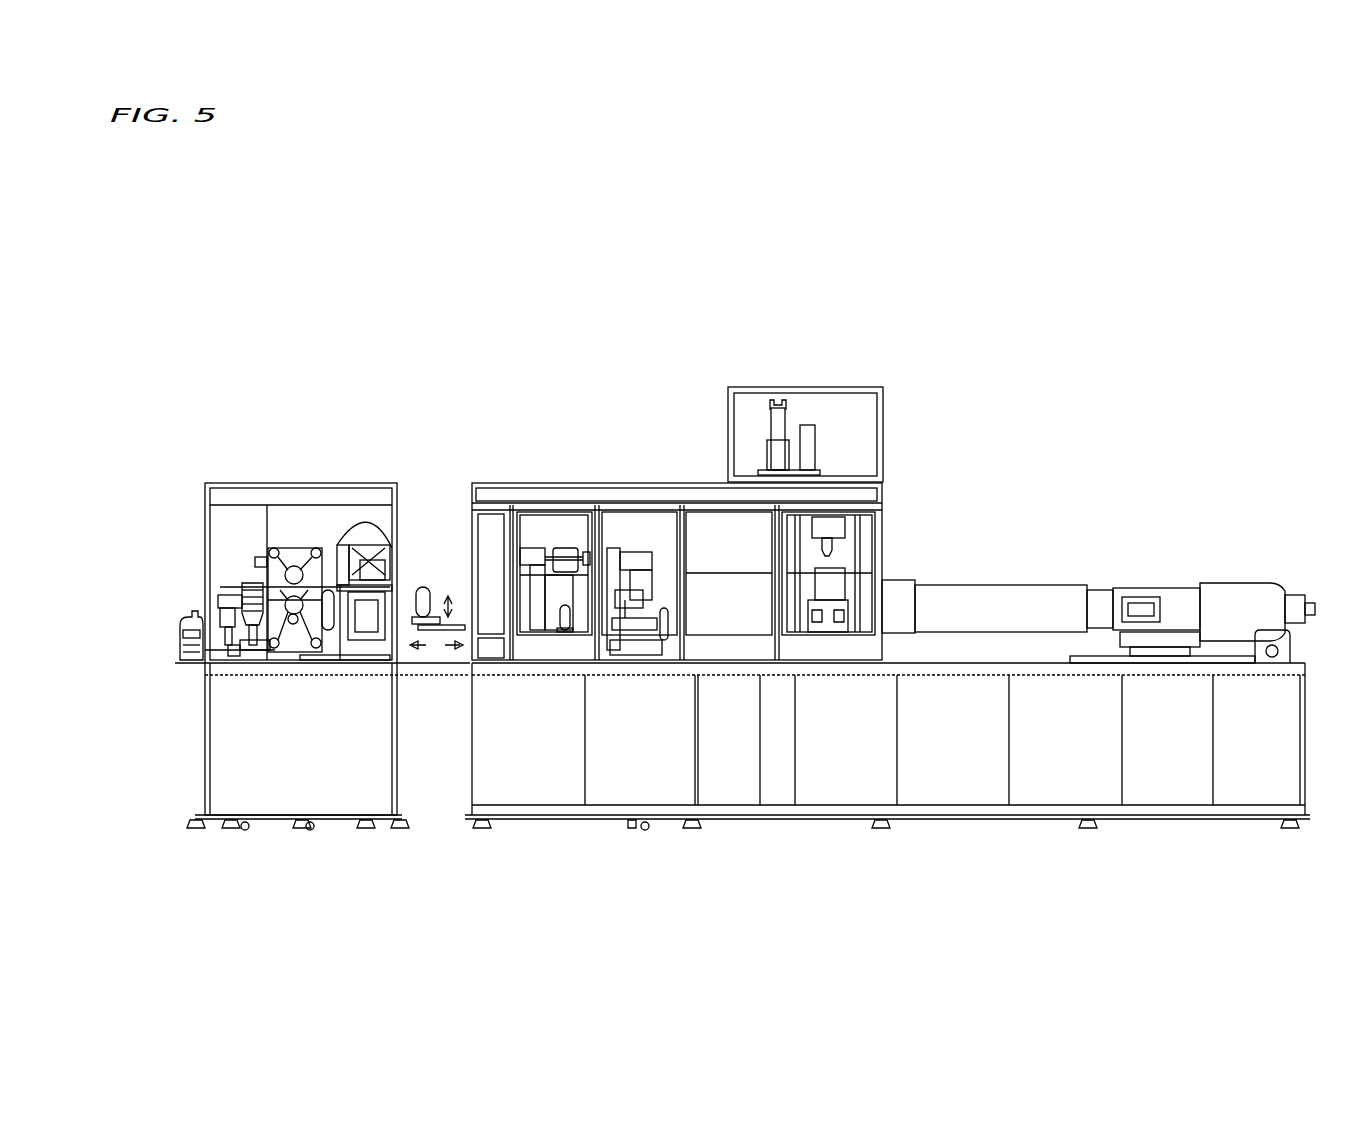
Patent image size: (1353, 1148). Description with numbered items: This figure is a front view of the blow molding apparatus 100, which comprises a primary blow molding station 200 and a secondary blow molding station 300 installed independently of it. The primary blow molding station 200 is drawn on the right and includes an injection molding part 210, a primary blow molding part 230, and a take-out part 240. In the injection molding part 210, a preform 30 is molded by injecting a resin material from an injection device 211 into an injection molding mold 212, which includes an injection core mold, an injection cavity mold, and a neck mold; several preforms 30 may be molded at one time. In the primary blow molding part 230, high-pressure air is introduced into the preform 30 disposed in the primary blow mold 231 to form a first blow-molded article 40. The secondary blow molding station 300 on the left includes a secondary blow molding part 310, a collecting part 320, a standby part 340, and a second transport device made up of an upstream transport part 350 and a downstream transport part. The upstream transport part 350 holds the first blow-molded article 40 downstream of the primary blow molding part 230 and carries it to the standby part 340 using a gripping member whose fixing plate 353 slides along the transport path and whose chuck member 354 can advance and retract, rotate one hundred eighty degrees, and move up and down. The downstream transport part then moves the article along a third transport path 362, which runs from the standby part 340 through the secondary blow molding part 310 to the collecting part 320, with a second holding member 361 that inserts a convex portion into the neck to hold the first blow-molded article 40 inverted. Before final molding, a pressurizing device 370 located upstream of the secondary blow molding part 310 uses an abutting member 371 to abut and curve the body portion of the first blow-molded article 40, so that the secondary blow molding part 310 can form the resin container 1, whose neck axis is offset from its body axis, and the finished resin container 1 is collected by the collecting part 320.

The resin container 1 is at (188, 617).
The preform 30 is at (558, 630).
The first blow-molded article 40 is at (423, 587).
The blow molding apparatus 100 is at (1147, 295).
The primary blow molding station 200 is at (683, 327).
The injection molding part 210 is at (827, 462).
The injection device 211 is at (1005, 600).
The injection molding mold 212 is at (830, 545).
The primary blow molding part 230 is at (562, 530).
The primary blow mold 231 is at (535, 548).
The take-out part 240 is at (638, 665).
The secondary blow molding station 300 is at (313, 327).
The secondary blow molding part 310 is at (296, 535).
The collecting part 320 is at (250, 540).
The standby part 340 is at (330, 535).
The upstream transport part 350 is at (443, 588).
The fixing plate 353 is at (428, 632).
The chuck member 354 is at (450, 652).
The second holding member 361 is at (222, 603).
The third transport path 362 is at (237, 652).
The pressurizing device 370 is at (342, 672).
The abutting member 371 is at (350, 560).